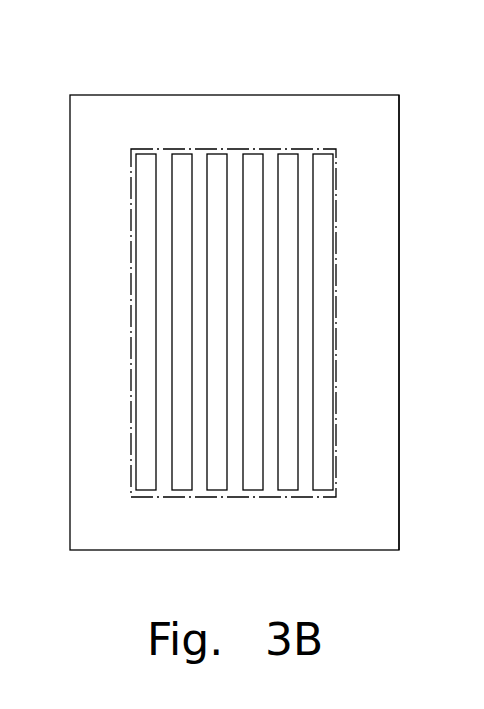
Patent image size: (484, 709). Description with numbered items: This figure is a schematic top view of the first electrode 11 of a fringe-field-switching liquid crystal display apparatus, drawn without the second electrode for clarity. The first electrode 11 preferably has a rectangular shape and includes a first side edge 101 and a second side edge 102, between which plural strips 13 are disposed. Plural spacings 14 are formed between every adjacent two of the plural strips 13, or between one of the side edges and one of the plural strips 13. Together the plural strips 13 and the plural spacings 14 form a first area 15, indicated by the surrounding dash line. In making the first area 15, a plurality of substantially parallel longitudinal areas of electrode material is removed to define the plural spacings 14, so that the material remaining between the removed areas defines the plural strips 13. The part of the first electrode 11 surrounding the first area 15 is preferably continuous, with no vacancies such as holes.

The first side edge 101 is at (79, 248).
The second side edge 102 is at (382, 326).
The first electrode 11 is at (399, 272).
The plural strips 13 is at (161, 469).
The plural spacings 14 is at (324, 160).
The first area 15 is at (130, 167).